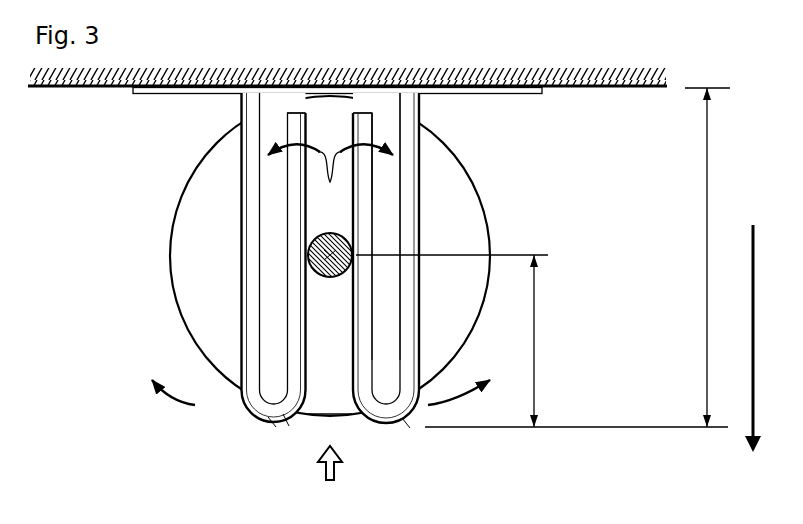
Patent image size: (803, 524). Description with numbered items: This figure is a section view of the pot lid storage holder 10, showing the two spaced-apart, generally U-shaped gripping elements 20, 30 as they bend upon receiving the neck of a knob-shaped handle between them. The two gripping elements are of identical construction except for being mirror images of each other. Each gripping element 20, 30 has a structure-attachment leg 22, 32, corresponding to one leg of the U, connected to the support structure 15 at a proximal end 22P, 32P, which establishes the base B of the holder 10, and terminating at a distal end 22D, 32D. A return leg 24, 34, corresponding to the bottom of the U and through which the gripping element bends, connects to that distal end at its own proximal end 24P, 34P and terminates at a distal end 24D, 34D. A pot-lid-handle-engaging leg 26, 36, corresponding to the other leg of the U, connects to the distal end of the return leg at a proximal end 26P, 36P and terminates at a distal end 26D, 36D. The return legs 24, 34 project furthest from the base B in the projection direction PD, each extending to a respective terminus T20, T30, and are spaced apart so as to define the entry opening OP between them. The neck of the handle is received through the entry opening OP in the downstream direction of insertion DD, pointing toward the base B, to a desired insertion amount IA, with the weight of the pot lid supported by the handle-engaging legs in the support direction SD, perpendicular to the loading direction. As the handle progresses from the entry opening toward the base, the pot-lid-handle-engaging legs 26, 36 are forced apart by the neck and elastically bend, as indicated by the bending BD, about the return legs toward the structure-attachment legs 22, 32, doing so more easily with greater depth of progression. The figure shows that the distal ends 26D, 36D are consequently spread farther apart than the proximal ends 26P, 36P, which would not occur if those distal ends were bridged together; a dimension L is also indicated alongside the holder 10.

The pot lid storage holder 10 is at (645, 120).
The support structure 15 is at (458, 94).
The gripping element 20 is at (155, 233).
The structure-attachment leg 22 is at (228, 252).
The proximal end of structure-attachment leg 22P is at (252, 92).
The distal end of structure-attachment leg 22D is at (243, 367).
The return leg 24 is at (246, 432).
The proximal end of return leg 24P is at (252, 408).
The distal end of return leg 24D is at (286, 430).
The pot-lid-handle-engaging leg 26 is at (276, 306).
The distal end of pot-lid-handle-engaging leg 26D is at (292, 113).
The proximal end of pot-lid-handle-engaging leg 26P is at (298, 422).
The gripping element 30 is at (500, 226).
The structure-attachment leg 32 is at (430, 277).
The proximal end of structure-attachment leg 32P is at (405, 92).
The distal end of structure-attachment leg 32D is at (425, 400).
The return leg 34 is at (430, 446).
The proximal end of return leg 34P is at (378, 396).
The distal end of return leg 34D is at (384, 436).
The pot-lid-handle-engaging leg 36 is at (392, 303).
The distal end of pot-lid-handle-engaging leg 36D is at (368, 113).
The proximal end of pot-lid-handle-engaging leg 36P is at (374, 432).
The terminus T20 is at (272, 425).
The terminus T30 is at (410, 428).
The base B is at (206, 108).
The bending BD is at (321, 287).
The downstream direction of insertion DD is at (333, 482).
The entry opening OP is at (347, 422).
The support direction SD is at (330, 278).
The insertion amount IA is at (537, 350).
The length L is at (709, 273).
The projection direction PD is at (755, 350).